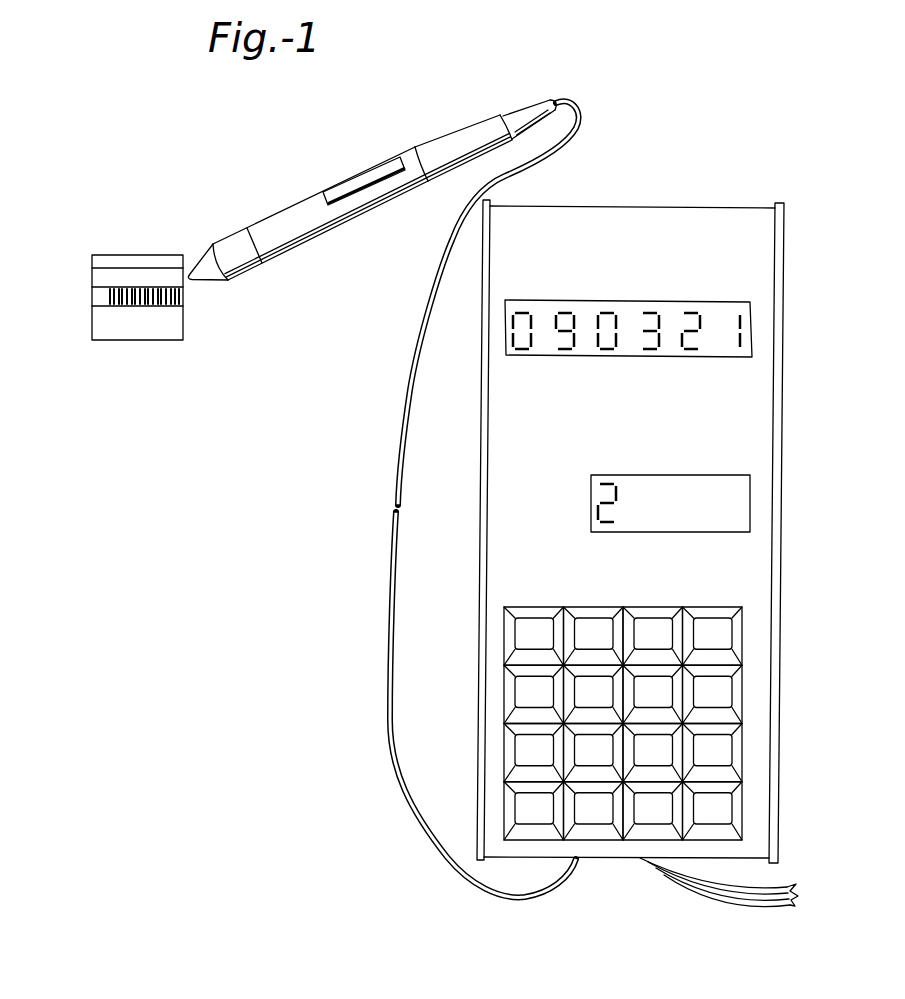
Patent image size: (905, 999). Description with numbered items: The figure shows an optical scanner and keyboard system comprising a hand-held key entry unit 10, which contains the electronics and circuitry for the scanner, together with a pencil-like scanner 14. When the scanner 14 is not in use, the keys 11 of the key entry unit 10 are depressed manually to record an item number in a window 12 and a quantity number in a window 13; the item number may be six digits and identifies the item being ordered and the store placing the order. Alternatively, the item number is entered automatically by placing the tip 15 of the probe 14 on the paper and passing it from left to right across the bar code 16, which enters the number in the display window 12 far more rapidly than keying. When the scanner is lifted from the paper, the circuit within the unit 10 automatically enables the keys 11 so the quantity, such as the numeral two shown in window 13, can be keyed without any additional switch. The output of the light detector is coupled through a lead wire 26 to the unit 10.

The key entry unit 10 is at (790, 346).
The keys 11 is at (645, 620).
The window 12 is at (678, 307).
The window 13 is at (670, 485).
The scanner 14 is at (388, 193).
The tip 15 is at (188, 283).
The bar code 16 is at (108, 298).
The lead wire 26 is at (393, 503).